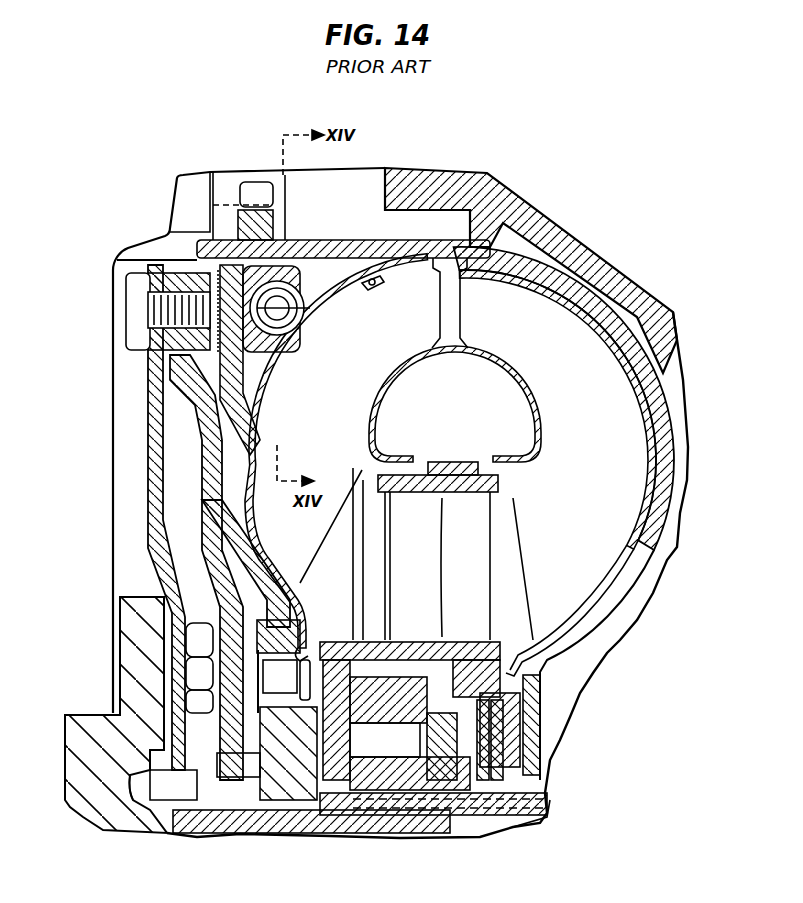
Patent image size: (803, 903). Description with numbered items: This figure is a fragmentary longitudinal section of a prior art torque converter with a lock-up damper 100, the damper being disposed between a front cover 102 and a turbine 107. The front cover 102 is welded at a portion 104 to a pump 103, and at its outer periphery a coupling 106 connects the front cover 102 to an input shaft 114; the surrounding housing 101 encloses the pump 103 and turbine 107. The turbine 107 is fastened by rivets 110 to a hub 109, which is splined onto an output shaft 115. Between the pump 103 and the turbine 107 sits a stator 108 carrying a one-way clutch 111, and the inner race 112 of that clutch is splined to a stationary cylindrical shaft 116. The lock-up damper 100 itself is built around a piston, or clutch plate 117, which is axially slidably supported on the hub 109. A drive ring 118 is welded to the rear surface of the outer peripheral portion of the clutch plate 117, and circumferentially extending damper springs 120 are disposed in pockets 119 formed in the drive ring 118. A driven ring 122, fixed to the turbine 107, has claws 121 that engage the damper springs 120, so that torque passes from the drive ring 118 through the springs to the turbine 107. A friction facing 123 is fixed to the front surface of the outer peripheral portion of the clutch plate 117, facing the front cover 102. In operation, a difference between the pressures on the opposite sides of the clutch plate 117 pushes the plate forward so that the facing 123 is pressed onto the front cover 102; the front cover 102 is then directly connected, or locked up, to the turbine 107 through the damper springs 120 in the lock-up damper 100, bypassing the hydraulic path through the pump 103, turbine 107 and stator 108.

The lock-up damper 100 is at (313, 272).
The housing 101 is at (672, 370).
The front cover 102 is at (165, 507).
The pump 103 is at (557, 518).
The welded portion 104 is at (492, 240).
The outer peripheral coupling 106 is at (138, 305).
The turbine 107 is at (336, 457).
The stator 108 is at (416, 551).
The hub 109 is at (278, 800).
The rivets 110 is at (303, 687).
The one-way clutch 111 is at (388, 742).
The inner race 112 is at (447, 778).
The input shaft 114 is at (88, 726).
The output shaft 115 is at (410, 812).
The stationary cylindrical shaft 116 is at (548, 822).
The clutch plate 117 is at (208, 440).
The drive ring 118 is at (243, 247).
The pockets 119 is at (290, 320).
The damper springs 120 is at (290, 255).
The claws 121 is at (300, 312).
The driven ring 122 is at (376, 284).
The friction facing 123 is at (215, 335).